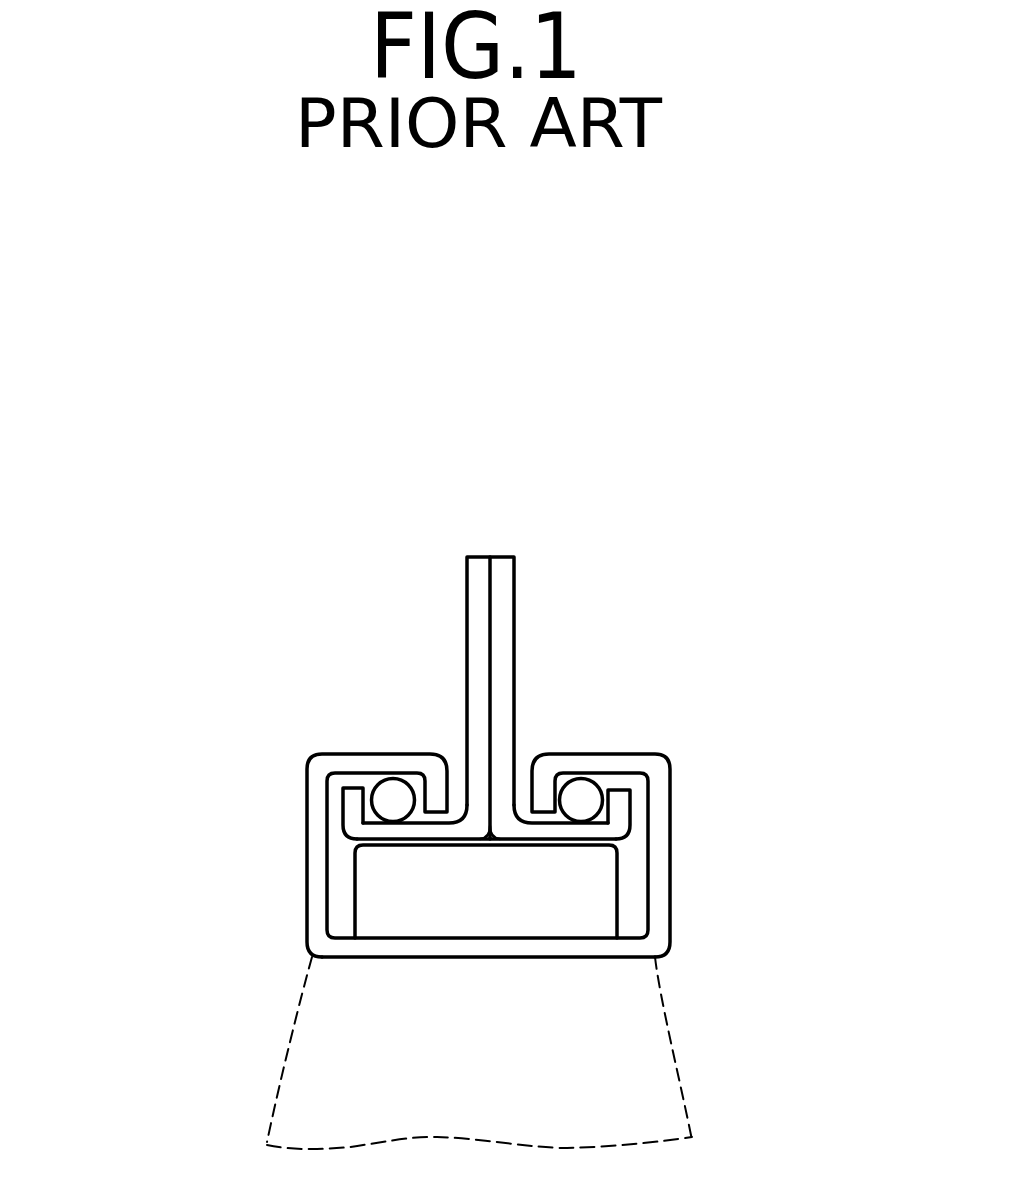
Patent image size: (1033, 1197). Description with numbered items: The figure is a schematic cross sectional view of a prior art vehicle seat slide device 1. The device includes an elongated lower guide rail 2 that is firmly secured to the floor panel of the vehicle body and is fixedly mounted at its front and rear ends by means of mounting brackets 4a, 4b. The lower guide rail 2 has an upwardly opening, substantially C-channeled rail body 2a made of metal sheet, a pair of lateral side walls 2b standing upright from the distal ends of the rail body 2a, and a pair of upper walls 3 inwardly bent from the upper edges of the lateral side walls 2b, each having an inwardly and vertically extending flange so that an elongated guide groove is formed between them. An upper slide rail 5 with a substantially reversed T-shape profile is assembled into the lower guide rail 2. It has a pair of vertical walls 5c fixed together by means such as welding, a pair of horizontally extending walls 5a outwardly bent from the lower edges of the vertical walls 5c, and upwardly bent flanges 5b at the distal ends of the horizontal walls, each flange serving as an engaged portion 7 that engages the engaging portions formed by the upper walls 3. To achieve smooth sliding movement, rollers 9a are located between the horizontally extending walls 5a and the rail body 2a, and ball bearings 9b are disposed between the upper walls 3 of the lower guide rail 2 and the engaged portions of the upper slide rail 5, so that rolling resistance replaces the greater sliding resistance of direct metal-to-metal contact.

The seat slide device 1 is at (284, 702).
The lower guide rail 2 is at (292, 865).
The rail body 2a is at (447, 947).
The lateral side walls 2b is at (330, 803).
The upper walls 3 is at (413, 753).
The mounting bracket 4a is at (617, 1070).
The mounting bracket 4b is at (595, 1053).
The upper slide rail 5 is at (530, 657).
The horizontally extending walls 5a is at (415, 835).
The upwardly bent flanges 5b is at (357, 835).
The vertical walls 5c is at (467, 618).
The engaged portion 7 is at (856, 722).
The rollers 9a is at (584, 898).
The ball bearings 9b is at (383, 787).